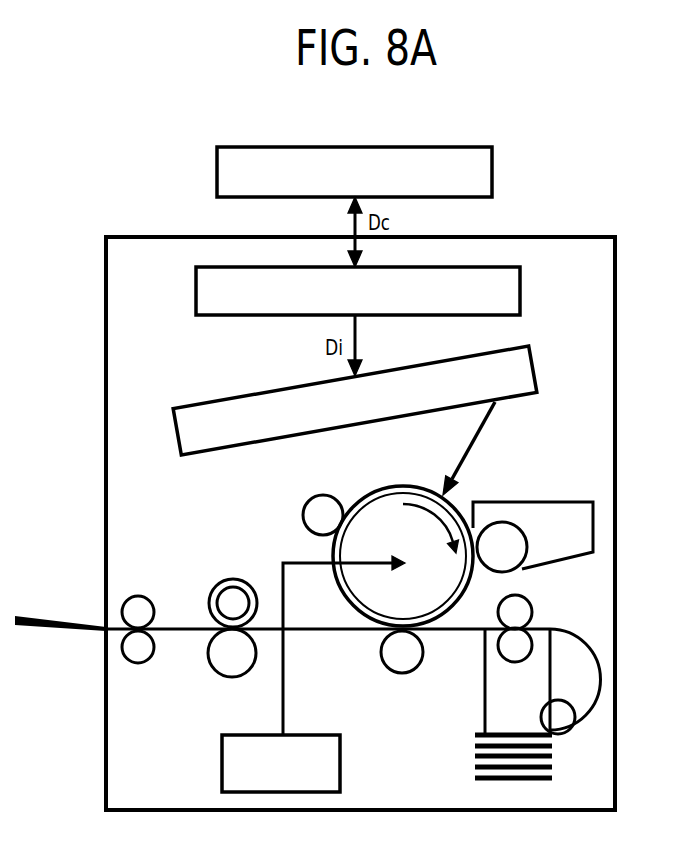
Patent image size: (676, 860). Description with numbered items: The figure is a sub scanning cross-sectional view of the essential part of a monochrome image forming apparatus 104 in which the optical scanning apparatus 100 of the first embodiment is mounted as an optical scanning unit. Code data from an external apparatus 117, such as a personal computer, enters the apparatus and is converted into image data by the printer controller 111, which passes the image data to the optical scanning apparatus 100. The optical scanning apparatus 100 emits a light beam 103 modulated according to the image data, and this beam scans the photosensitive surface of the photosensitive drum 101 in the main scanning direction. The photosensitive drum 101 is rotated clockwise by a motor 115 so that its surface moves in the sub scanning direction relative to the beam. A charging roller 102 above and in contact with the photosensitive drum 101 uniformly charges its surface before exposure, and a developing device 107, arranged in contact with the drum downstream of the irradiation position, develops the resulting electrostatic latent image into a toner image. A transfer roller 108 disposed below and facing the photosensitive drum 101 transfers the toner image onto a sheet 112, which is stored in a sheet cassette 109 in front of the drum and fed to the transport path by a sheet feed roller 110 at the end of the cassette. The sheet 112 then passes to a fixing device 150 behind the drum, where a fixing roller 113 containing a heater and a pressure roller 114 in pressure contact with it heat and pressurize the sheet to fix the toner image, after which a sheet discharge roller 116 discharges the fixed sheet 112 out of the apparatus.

The external apparatus 117 is at (493, 165).
The monochrome image forming apparatus 104 is at (592, 237).
The printer controller 111 is at (521, 292).
The optical scanning apparatus 100 is at (220, 403).
The light beam 103 is at (477, 437).
The developing device 107 is at (563, 502).
The charging roller 102 is at (315, 505).
The photosensitive drum 101 is at (455, 577).
The sheet 112 is at (318, 632).
The sheet discharge roller 116 is at (135, 598).
The fixing device 150 is at (190, 634).
The fixing roller 113 is at (233, 598).
The pressure roller 114 is at (233, 676).
The transfer roller 108 is at (402, 673).
The sheet cassette 109 is at (472, 764).
The sheet feed roller 110 is at (562, 722).
The motor 115 is at (222, 764).